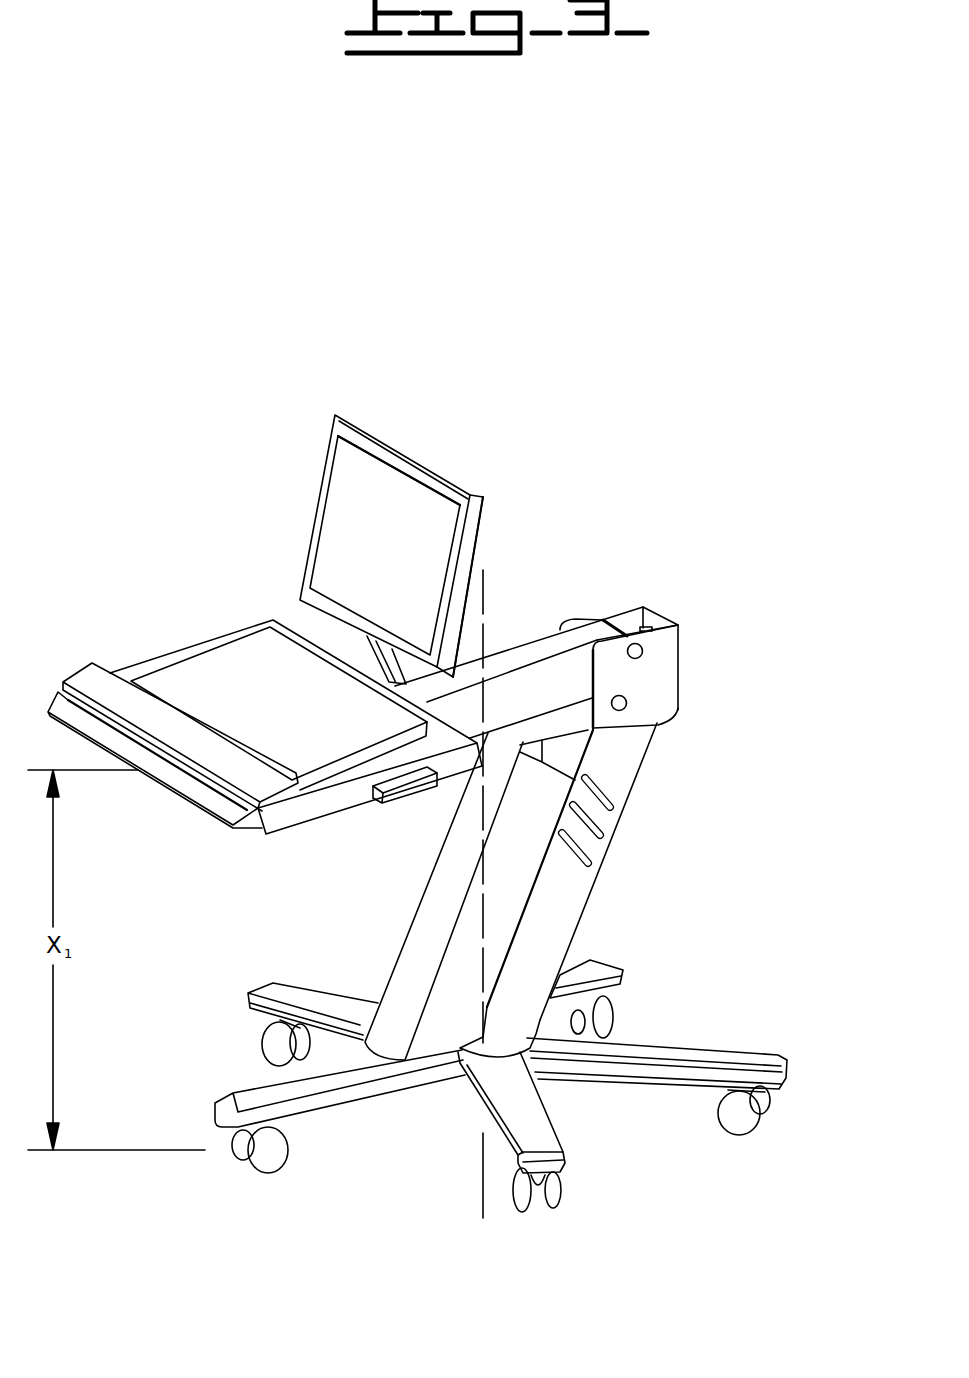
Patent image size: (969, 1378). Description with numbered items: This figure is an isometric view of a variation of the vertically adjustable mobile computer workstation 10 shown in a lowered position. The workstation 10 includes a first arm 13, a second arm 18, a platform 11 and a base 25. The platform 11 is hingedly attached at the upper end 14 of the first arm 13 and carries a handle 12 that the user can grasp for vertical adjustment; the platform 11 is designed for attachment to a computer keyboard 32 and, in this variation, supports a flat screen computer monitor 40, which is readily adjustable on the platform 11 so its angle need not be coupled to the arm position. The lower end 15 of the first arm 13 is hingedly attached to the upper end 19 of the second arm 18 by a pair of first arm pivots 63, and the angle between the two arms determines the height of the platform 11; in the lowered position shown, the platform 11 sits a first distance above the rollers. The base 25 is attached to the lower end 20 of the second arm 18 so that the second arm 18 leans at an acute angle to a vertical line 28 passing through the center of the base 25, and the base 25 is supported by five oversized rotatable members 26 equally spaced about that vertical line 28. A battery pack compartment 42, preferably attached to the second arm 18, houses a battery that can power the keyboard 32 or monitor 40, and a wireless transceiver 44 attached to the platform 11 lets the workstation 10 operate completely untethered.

The vertically adjustable mobile computer workstation 10 is at (675, 489).
The platform 11 is at (290, 833).
The handle 12 is at (233, 827).
The first arm 13 is at (713, 682).
The upper end of first arm 14 is at (518, 788).
The lower end of first arm 15 is at (583, 640).
The second arm 18 is at (615, 836).
The upper end of second arm 19 is at (646, 740).
The lower end of second arm 20 is at (501, 1047).
The base 25 is at (587, 995).
The rotatable members 26 is at (610, 1030).
The vertical line 28 is at (483, 1208).
The computer keyboard 32 is at (207, 633).
The flat screen computer monitor 40 is at (412, 450).
The battery pack compartment 42 is at (407, 977).
The wireless transceiver 44 is at (393, 803).
The first arm pivots 63 is at (641, 656).